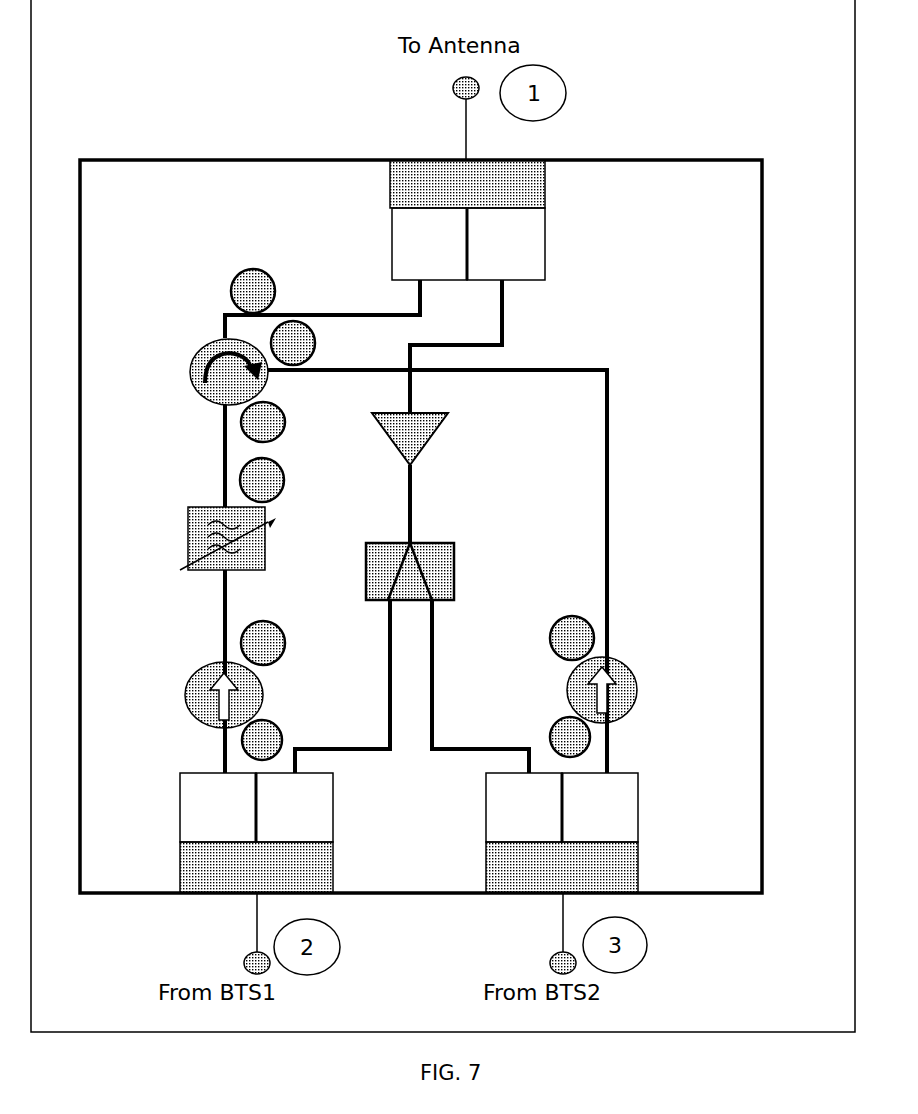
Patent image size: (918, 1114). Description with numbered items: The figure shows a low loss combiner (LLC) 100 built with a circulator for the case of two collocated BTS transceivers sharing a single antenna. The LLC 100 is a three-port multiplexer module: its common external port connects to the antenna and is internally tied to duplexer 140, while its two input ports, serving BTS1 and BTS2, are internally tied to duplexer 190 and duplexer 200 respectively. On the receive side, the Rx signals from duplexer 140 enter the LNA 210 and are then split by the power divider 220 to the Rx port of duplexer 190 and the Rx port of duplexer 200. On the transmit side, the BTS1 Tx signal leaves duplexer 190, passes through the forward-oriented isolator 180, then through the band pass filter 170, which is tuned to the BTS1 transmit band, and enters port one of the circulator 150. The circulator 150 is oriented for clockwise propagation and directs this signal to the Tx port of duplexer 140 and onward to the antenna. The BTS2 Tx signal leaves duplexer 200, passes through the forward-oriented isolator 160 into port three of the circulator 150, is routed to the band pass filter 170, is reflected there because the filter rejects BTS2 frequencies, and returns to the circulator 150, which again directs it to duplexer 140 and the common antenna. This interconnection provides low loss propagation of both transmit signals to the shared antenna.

The low loss combiner (LLC) 100 is at (645, 160).
The duplexer 140 is at (548, 235).
The circulator 150 is at (188, 362).
The isolator 160 is at (615, 662).
The band pass filter 170 is at (180, 530).
The isolator 180 is at (185, 690).
The duplexer 190 is at (205, 768).
The duplexer 200 is at (625, 770).
The LNA 210 is at (433, 435).
The power divider 220 is at (454, 545).